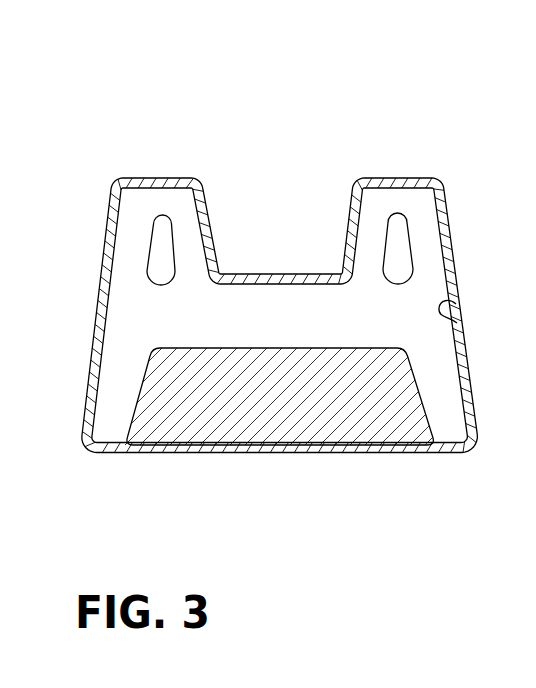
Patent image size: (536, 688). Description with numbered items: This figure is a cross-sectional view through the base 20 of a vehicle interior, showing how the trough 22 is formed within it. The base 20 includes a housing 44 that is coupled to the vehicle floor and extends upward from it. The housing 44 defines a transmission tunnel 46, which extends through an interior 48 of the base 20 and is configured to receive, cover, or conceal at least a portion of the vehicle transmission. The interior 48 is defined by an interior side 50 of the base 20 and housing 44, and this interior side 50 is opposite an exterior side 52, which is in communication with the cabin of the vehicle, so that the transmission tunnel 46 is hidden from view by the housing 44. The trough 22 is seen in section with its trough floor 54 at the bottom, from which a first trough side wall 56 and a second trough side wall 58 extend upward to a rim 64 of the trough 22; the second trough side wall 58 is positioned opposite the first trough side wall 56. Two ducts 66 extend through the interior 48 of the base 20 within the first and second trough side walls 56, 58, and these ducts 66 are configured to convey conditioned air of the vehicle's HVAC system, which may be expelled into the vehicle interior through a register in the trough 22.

The base 20 is at (370, 127).
The trough 22 is at (247, 261).
The housing 44 is at (83, 408).
The transmission tunnel 46 is at (238, 402).
The interior 48 is at (433, 283).
The interior side 50 is at (457, 323).
The exterior side 52 is at (104, 262).
The trough floor 54 is at (290, 273).
The first trough side wall 56 is at (213, 222).
The second trough side wall 58 is at (348, 225).
The rim 64 is at (157, 178).
The ducts 66 is at (148, 232).